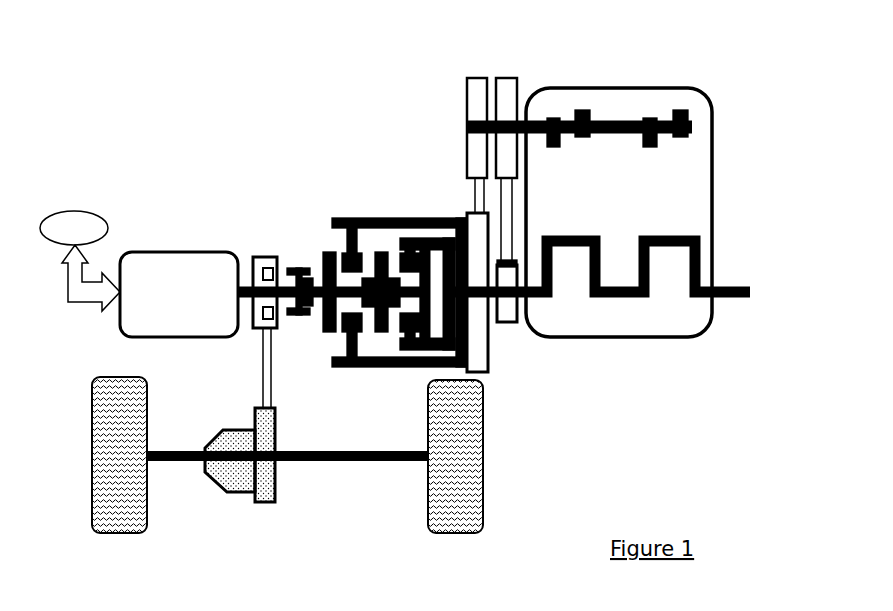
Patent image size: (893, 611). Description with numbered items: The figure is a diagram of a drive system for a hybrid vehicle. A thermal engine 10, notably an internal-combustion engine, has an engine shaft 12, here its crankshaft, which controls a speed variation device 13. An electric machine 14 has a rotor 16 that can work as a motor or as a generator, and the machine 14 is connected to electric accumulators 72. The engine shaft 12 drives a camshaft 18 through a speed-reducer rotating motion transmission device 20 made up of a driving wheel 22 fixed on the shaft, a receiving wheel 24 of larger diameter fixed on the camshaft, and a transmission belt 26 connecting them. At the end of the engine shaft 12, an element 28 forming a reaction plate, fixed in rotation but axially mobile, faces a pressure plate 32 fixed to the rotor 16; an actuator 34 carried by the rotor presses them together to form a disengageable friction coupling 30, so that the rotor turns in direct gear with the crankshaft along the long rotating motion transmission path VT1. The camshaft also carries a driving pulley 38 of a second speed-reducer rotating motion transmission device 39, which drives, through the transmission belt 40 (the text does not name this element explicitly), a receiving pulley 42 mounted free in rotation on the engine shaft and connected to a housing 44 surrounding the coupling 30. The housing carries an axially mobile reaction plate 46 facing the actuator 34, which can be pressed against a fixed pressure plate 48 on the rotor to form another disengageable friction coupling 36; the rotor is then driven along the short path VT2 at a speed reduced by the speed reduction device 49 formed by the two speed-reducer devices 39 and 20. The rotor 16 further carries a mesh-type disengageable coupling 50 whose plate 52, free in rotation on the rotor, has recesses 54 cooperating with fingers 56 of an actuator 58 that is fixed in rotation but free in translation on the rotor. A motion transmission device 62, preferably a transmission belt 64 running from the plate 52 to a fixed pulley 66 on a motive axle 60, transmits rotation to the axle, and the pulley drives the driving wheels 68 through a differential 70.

The thermal engine 10 is at (623, 197).
The engine shaft 12 is at (525, 300).
The speed variation device 13 is at (495, 65).
The electric machine 14 is at (179, 294).
The rotor 16 is at (248, 288).
The camshaft 18 is at (712, 107).
The speed-reducer rotating motion transmission device 20 is at (503, 250).
The driving wheel 22 is at (518, 308).
The receiving wheel 24 is at (505, 90).
The transmission belt 26 is at (516, 227).
The element of disengageable friction coupling 28 is at (412, 336).
The disengageable friction coupling 30 is at (378, 218).
The pressure plate 32 is at (430, 338).
The actuator 34 is at (381, 247).
The other disengageable friction coupling 36 is at (337, 247).
The driving pulley 38 is at (468, 78).
The speed-reducer rotating motion transmission device 39 is at (458, 108).
The gear 40 is at (468, 205).
The receiving pulley 42 is at (488, 340).
The housing 44 is at (397, 247).
The reaction plate 46 is at (381, 247).
The pressure plate 48 is at (318, 262).
The speed reduction device 49 is at (515, 328).
The disengageable coupling 50 is at (245, 328).
The plate 52 is at (252, 332).
The recesses 54 is at (263, 257).
The fingers 56 is at (288, 320).
The actuator 58 is at (302, 322).
The motive axle 60 is at (325, 522).
The motion transmission device 62 is at (280, 387).
The transmission belt 64 is at (258, 400).
The fixed pulley 66 is at (270, 478).
The driving wheels 68 is at (473, 490).
The differential 70 is at (235, 475).
The electric accumulators 72 is at (80, 261).
The rotating motion transmission path VT1 is at (457, 328).
The rotating motion transmission path VT2 is at (458, 180).